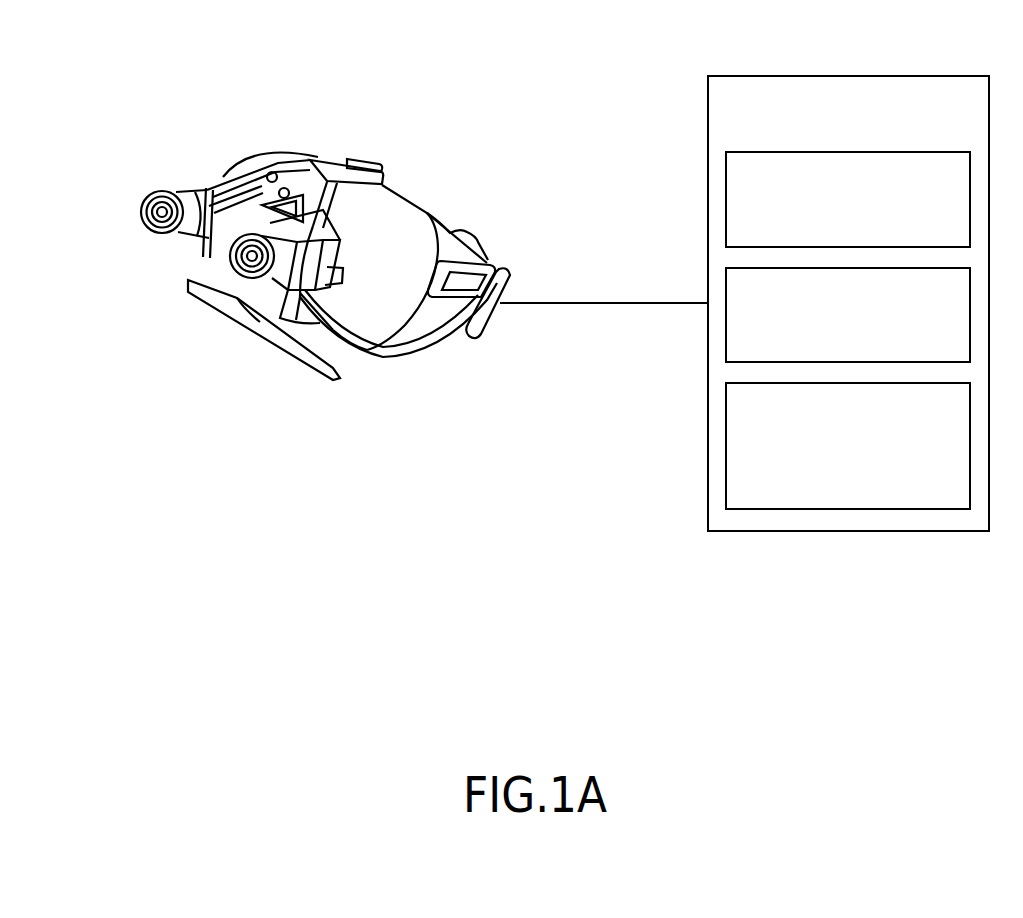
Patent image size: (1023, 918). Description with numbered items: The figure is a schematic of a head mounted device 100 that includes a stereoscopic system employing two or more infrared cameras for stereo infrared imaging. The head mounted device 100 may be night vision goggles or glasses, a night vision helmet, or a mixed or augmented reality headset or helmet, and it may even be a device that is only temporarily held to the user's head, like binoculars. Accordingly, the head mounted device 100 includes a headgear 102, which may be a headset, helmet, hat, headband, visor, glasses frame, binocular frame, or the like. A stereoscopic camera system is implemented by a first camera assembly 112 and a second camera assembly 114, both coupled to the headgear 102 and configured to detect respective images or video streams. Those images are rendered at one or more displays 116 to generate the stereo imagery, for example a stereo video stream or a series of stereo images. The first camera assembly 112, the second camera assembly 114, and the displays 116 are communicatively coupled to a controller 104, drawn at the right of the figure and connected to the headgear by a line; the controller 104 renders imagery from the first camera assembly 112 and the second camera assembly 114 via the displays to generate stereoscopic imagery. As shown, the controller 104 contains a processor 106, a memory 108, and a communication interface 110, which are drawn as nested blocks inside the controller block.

The head mounted device 100 is at (142, 56).
The headgear 102 is at (326, 163).
The controller 104 is at (753, 101).
The processor 106 is at (772, 177).
The memory 108 is at (772, 294).
The communication interface 110 is at (772, 409).
The first camera assembly 112 is at (148, 233).
The second camera assembly 114 is at (237, 303).
The displays 116 is at (377, 330).